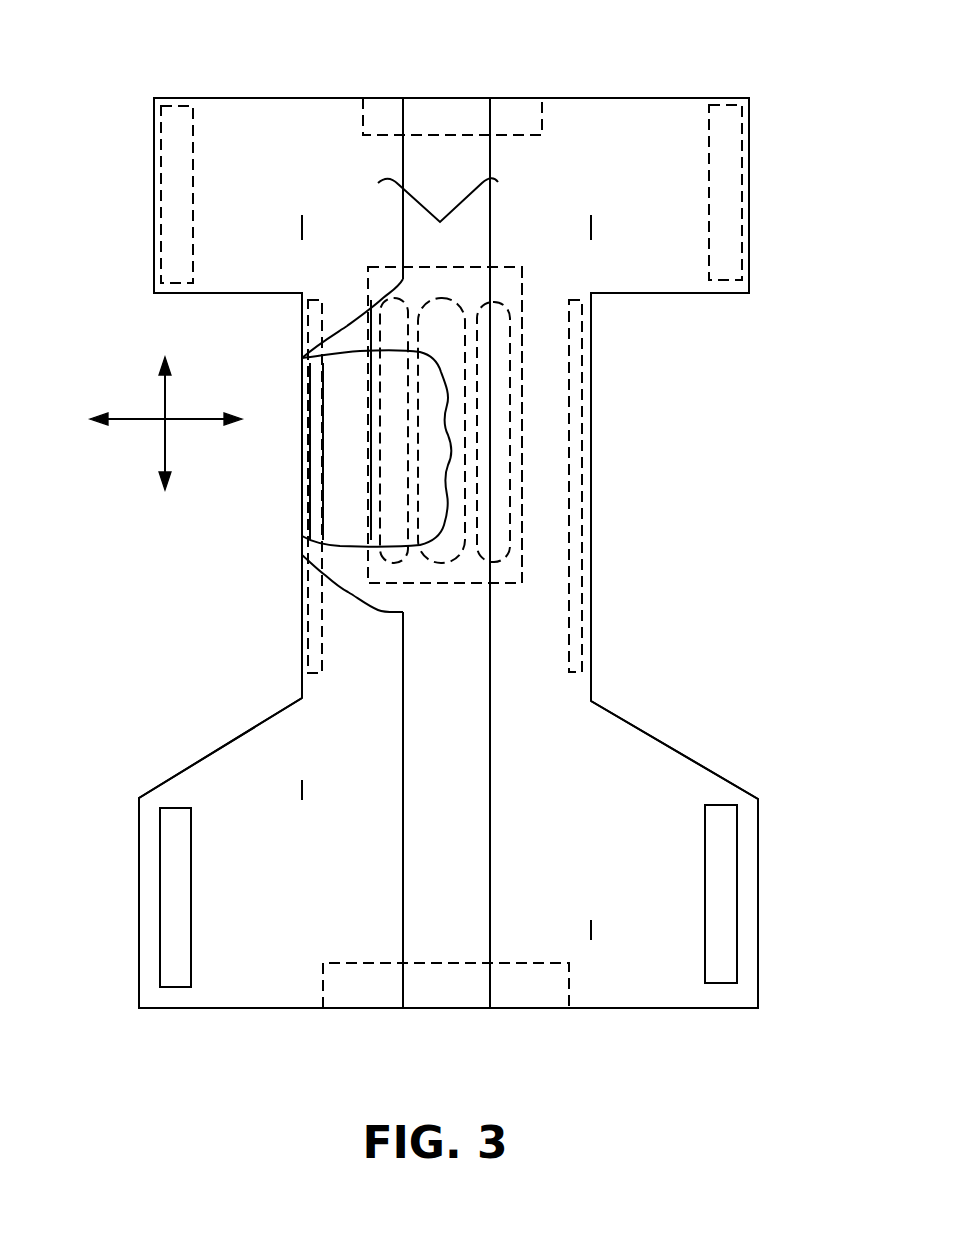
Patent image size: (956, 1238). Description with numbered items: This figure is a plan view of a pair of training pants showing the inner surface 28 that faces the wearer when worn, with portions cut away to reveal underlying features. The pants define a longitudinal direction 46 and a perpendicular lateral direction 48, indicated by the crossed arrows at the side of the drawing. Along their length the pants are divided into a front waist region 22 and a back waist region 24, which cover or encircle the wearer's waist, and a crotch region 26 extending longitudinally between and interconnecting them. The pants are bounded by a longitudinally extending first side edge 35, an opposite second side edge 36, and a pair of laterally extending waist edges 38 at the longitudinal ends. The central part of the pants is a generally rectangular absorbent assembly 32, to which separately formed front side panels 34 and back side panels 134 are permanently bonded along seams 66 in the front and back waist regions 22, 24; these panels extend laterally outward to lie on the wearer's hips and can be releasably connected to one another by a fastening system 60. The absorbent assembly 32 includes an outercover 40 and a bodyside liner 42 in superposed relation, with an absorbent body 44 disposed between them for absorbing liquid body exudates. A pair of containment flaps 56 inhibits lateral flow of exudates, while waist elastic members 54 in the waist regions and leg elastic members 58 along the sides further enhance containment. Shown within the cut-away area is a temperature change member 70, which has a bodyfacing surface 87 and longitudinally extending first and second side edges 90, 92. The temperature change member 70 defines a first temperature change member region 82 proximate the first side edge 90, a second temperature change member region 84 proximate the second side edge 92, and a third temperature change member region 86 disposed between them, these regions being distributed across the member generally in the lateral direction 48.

The front waist region 22 is at (150, 126).
The back waist region 24 is at (722, 752).
The crotch region 26 is at (660, 622).
The inner surface 28 is at (576, 990).
The absorbent assembly 32 is at (600, 576).
The front side panels 34 is at (660, 110).
The first side edge 35 is at (302, 616).
The second side edge 36 is at (592, 681).
The waist edges 38 is at (330, 98).
The outercover 40 is at (308, 528).
The bodyside liner 42 is at (434, 681).
The absorbent body 44 is at (347, 383).
The longitudinal direction 46 is at (163, 394).
The lateral direction 48 is at (189, 418).
The waist elastic members 54 is at (438, 117).
The containment flaps 56 is at (438, 217).
The leg elastic members 58 is at (305, 488).
The fastening system 60 is at (159, 170).
The seams 66 is at (302, 226).
The temperature change member 70 is at (400, 456).
The first temperature change member region 82 is at (393, 303).
The second temperature change member region 84 is at (503, 305).
The third temperature change member region 86 is at (442, 300).
The temperature change member bodyfacing surface 87 is at (375, 432).
The temperature change member first side edge 90 is at (372, 477).
The temperature change member second side edge 92 is at (522, 417).
The back side panels 134 is at (220, 901).